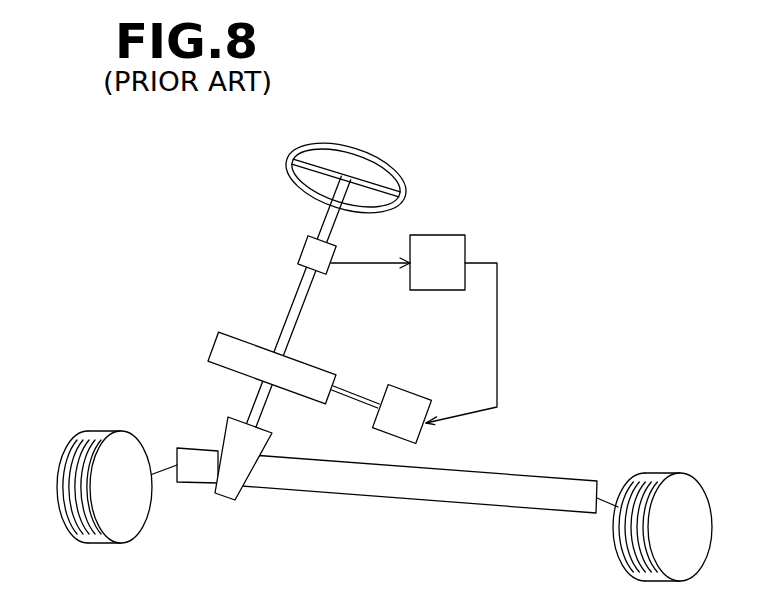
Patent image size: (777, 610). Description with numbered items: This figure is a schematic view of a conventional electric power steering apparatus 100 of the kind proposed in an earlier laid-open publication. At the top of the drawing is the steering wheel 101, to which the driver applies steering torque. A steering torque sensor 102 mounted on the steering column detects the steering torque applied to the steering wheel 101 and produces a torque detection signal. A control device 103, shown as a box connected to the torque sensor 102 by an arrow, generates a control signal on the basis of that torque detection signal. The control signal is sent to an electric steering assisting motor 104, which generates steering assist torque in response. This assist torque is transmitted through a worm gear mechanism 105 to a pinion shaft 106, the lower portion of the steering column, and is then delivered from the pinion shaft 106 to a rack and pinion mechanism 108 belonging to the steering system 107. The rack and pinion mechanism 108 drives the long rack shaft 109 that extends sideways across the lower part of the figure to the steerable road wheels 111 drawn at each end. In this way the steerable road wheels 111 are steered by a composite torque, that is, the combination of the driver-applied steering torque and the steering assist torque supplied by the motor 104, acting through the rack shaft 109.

The steering system (prior art) 100 is at (532, 208).
The steering wheel 101 is at (363, 147).
The steering torque sensor 102 is at (298, 248).
The control device 103 is at (442, 235).
The electric steering assisting motor 104 is at (380, 393).
The worm gear mechanism 105 is at (217, 342).
The pinion shaft 106 is at (254, 403).
The steering system 107 is at (235, 510).
The rack and pinion mechanism 108 is at (232, 472).
The rack shaft 109 is at (405, 492).
The steerable road wheels 111 is at (102, 430).